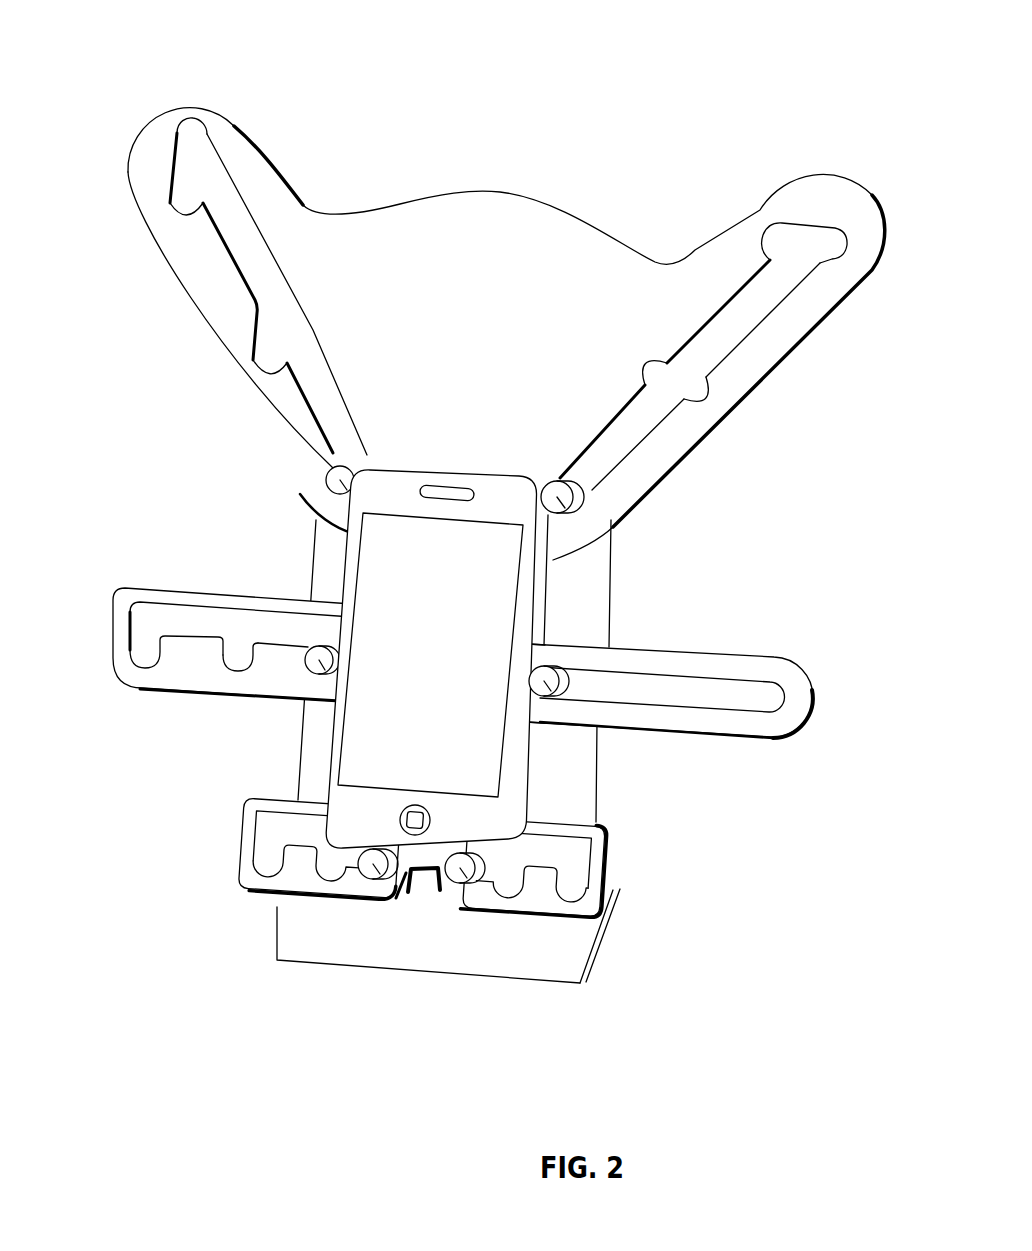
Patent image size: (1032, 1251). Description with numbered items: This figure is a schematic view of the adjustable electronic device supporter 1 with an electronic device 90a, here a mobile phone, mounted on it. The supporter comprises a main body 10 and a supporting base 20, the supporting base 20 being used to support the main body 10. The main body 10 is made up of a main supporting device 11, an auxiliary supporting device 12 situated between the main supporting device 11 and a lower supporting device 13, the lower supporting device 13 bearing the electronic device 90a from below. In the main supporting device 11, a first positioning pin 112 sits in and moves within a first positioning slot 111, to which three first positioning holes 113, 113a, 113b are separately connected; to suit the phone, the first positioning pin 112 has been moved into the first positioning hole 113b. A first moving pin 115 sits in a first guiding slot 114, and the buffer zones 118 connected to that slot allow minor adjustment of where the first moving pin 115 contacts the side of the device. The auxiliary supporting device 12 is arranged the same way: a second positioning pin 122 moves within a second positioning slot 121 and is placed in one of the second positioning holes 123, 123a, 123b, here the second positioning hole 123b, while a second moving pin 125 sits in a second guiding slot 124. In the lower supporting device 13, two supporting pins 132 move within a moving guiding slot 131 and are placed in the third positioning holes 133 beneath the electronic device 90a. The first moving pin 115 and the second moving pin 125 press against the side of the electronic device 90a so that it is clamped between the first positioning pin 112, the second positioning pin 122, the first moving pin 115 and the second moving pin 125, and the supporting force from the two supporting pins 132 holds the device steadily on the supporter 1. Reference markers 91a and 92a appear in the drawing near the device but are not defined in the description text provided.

The adjustable electronic device supporter 1 is at (494, 552).
The main body 10 is at (494, 415).
The main supporting device 11 is at (506, 465).
The first positioning slot 111 is at (238, 240).
The first positioning pin 112 is at (330, 500).
The first positioning hole 113 is at (180, 205).
The first positioning hole 113a is at (262, 365).
The first positioning hole 113b is at (333, 467).
The first guiding slot 114 is at (740, 313).
The first moving pin 115 is at (613, 527).
The buffer zone 118 is at (833, 242).
The auxiliary supporting device 12 is at (658, 710).
The second positioning slot 121 is at (218, 651).
The second positioning pin 122 is at (327, 658).
The second positioning hole 123 is at (143, 660).
The second positioning hole 123a is at (243, 658).
The second positioning hole 123b is at (327, 680).
The second guiding slot 124 is at (735, 697).
The second moving pin 125 is at (545, 688).
The lower supporting device 13 is at (440, 940).
The moving guiding slot 131 is at (567, 850).
The supporting pin 132 is at (407, 885).
The third positioning hole 133 is at (572, 1000).
The supporting base 20 is at (603, 950).
The electronic device 90a is at (503, 700).
The left body rail 91a is at (348, 553).
The right body rail 92a is at (540, 597).